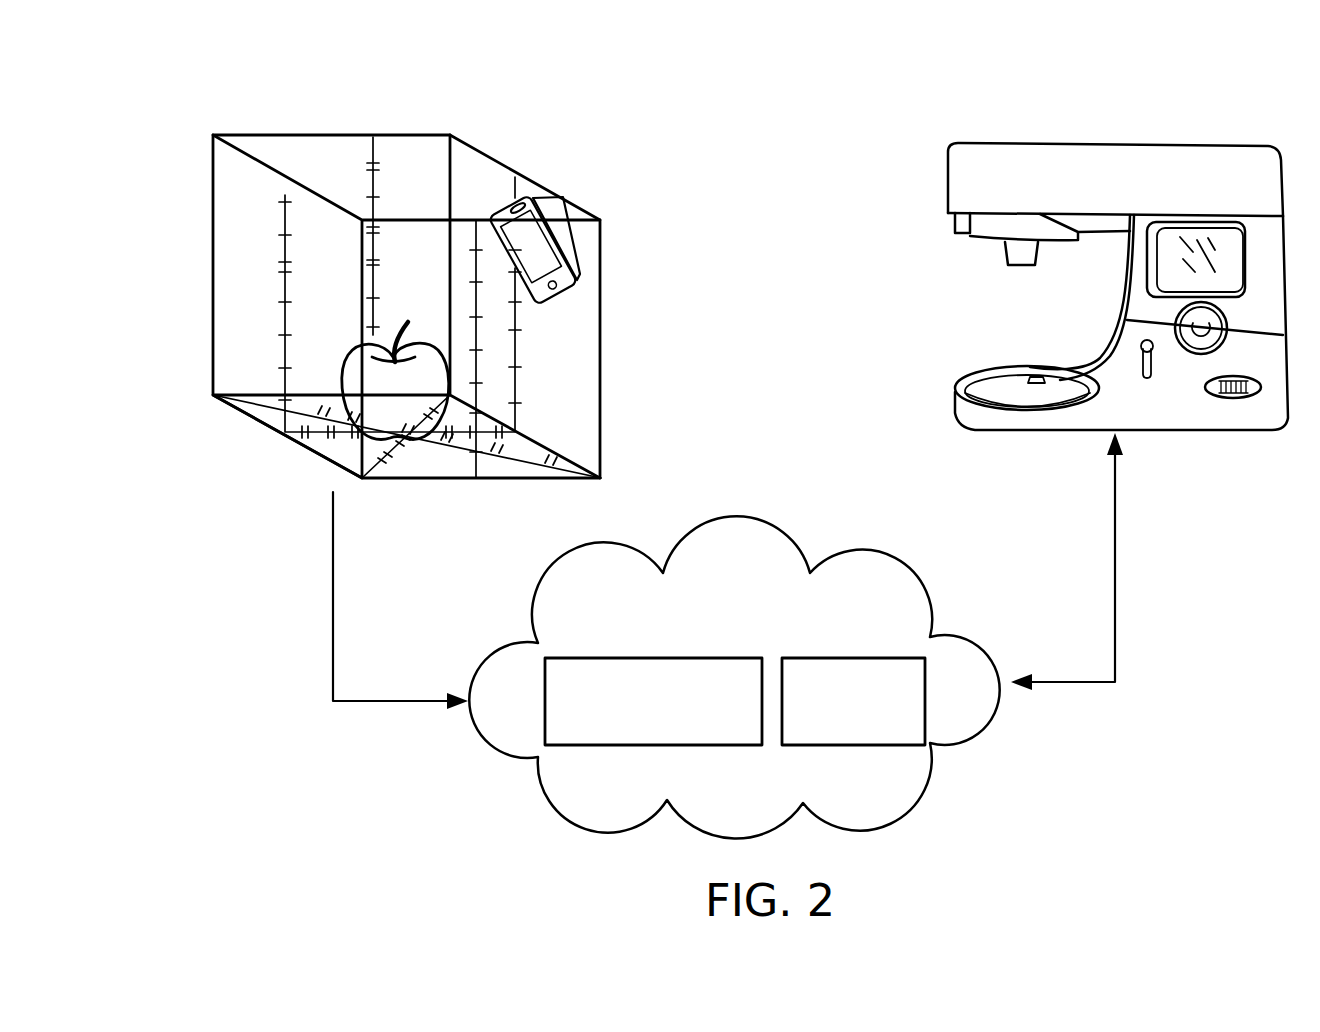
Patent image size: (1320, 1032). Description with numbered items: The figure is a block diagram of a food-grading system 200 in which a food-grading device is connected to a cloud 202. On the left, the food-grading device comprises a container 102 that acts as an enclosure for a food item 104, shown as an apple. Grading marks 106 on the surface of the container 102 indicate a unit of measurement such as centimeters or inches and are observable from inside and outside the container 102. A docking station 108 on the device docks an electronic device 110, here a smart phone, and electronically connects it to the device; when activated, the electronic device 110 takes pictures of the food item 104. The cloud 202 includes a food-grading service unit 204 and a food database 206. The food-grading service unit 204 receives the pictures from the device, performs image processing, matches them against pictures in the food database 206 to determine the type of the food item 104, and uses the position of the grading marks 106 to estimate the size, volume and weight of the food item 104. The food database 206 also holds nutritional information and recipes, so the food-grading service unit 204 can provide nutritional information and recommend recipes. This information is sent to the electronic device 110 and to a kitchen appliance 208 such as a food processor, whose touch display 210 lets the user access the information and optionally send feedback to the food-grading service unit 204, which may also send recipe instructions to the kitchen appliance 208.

The container 102 is at (602, 395).
The food item 104 is at (385, 355).
The grading marks 106 is at (370, 163).
The docking station 108 is at (567, 233).
The electronic device 110 is at (520, 202).
The food-grading system 200 is at (811, 96).
The cloud 202 is at (740, 517).
The food-grading service unit 204 is at (543, 702).
The food database 206 is at (918, 693).
The kitchen appliance 208 is at (1188, 435).
The touch display 210 is at (1225, 245).